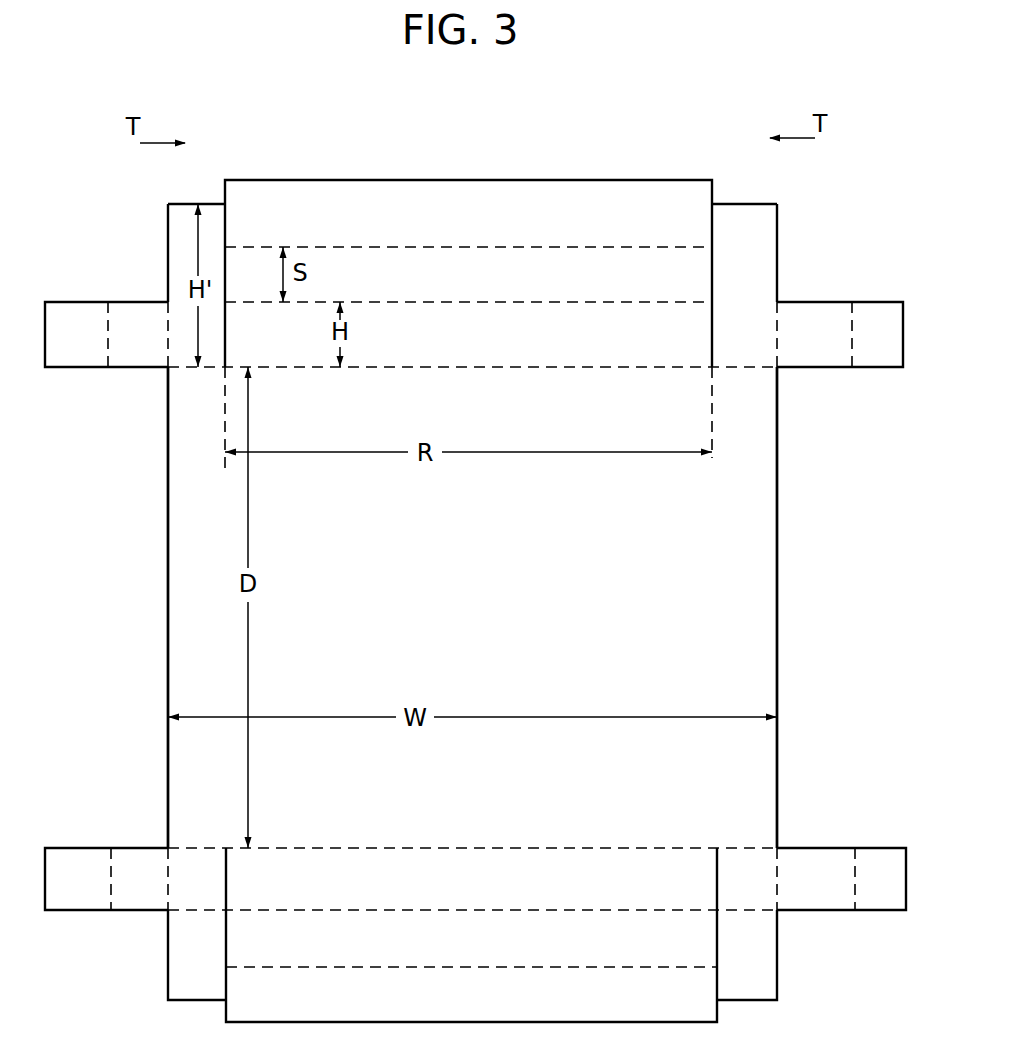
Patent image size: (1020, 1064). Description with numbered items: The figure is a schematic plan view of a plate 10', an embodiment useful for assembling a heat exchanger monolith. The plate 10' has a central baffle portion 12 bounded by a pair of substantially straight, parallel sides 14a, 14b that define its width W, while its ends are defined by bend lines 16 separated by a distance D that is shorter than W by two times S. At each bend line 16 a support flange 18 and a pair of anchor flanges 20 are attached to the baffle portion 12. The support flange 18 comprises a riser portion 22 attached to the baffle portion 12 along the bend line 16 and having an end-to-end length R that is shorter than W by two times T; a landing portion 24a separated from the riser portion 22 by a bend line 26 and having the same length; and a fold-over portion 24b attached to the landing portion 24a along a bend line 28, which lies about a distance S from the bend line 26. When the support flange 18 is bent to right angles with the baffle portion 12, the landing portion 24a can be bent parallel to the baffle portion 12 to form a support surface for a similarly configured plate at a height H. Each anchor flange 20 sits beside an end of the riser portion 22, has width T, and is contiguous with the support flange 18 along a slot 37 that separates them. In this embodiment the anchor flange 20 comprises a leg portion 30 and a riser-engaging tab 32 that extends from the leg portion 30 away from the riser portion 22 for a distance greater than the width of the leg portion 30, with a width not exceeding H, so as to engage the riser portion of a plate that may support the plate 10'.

The plate 10' is at (355, 112).
The baffle portion 12 is at (401, 568).
The side 14a is at (166, 590).
The side 14b is at (777, 590).
The bend line 16 is at (630, 367).
The support flange 18 is at (612, 180).
The anchor flange 20 is at (166, 256).
The riser portion 22 is at (486, 346).
The landing portion 24a is at (476, 288).
The fold-over portion 24b is at (527, 228).
The bend line 26 is at (505, 302).
The bend line 28 is at (308, 247).
The leg portion 30 is at (178, 346).
The riser-engaging tab 32 is at (108, 302).
The slot 37 is at (226, 246).